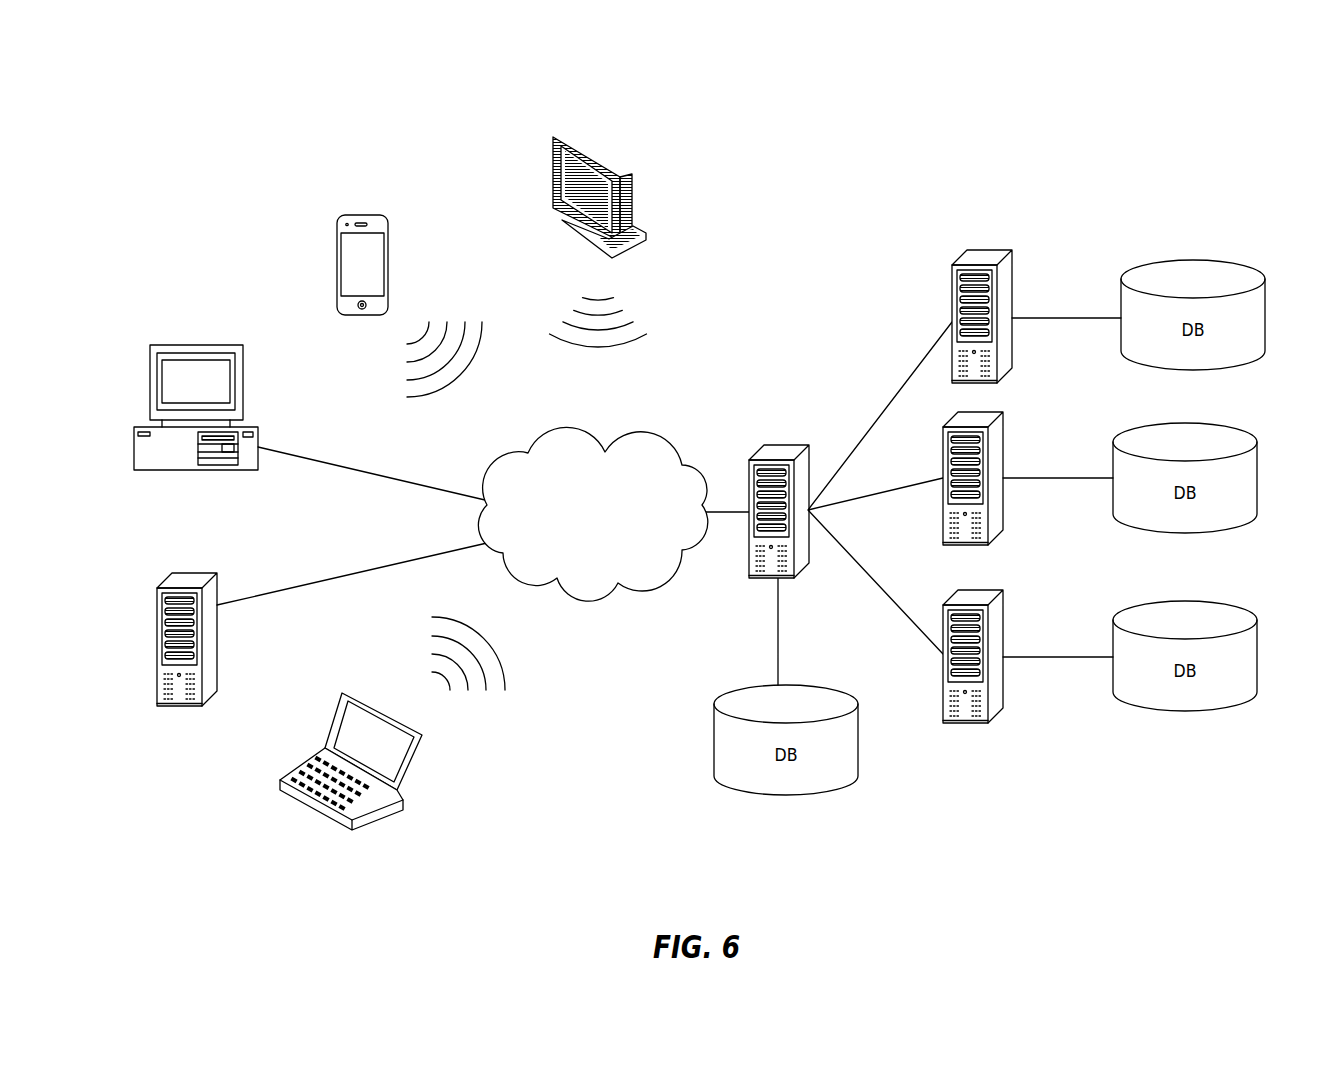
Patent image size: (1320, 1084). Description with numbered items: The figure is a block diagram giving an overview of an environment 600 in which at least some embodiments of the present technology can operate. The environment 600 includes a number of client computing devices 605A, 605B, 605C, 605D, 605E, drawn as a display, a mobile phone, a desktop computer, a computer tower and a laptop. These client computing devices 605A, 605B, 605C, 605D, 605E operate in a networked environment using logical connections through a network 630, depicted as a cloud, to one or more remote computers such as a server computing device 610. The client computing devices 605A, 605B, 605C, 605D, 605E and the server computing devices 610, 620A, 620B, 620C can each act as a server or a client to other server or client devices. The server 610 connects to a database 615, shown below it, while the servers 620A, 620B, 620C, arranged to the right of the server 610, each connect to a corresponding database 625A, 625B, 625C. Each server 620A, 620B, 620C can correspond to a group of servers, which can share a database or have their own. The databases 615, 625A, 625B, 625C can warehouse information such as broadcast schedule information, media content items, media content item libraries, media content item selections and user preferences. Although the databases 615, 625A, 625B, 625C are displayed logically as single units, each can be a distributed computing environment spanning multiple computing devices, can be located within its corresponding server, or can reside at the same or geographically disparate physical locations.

The environment 600 is at (1058, 138).
The client computing device 605A is at (630, 176).
The client computing device 605B is at (386, 215).
The client computing device 605C is at (238, 345).
The client computing device 605D is at (210, 572).
The client computing device 605E is at (418, 763).
The server computing device 610 is at (788, 440).
The database 615 is at (838, 687).
The server computing device 620A is at (1013, 252).
The server computing device 620B is at (1003, 414).
The server computing device 620C is at (1003, 592).
The database 625A is at (1188, 260).
The database 625B is at (1182, 422).
The database 625C is at (1182, 600).
The network 630 is at (648, 436).